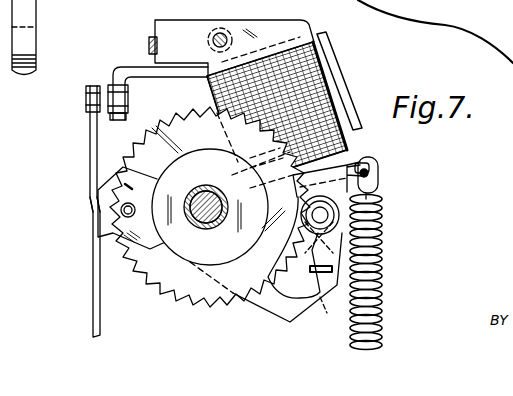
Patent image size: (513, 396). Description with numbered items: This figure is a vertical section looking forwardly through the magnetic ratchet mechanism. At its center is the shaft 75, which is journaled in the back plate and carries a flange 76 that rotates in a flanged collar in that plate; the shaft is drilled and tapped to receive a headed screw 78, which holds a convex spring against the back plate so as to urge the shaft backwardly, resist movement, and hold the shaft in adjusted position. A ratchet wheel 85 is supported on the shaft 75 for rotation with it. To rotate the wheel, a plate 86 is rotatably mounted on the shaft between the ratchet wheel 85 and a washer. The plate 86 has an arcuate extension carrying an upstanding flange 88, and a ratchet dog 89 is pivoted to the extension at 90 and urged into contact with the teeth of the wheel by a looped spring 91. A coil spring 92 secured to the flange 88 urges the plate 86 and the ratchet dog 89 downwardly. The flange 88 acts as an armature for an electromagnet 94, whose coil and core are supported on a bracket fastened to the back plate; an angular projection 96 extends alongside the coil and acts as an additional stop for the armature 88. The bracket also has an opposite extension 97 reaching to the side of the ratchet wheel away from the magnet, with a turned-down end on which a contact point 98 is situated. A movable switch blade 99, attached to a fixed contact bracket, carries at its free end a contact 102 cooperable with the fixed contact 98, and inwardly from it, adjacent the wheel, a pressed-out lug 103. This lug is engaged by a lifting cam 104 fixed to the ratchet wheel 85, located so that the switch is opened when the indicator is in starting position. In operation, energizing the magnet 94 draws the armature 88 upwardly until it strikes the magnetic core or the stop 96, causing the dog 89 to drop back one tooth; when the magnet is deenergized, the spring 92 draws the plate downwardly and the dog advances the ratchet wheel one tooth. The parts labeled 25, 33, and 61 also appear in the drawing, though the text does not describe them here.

The housing 25 is at (277, 2).
The cable 33 is at (435, 31).
The rod 61 is at (0, 12).
The shaft 75 is at (205, 228).
The flange 76 is at (217, 266).
The headed screw 78 is at (200, 186).
The ratchet wheel 85 is at (167, 287).
The plate 86 is at (280, 308).
The upstanding flange 88 is at (363, 160).
The ratchet dog 89 is at (312, 302).
The pivot 90 is at (370, 183).
The looped spring 91 is at (318, 276).
The coil spring 92 is at (385, 252).
The electromagnet 94 is at (317, 80).
The angular projection 96 is at (340, 124).
The opposite extension 97 is at (133, 67).
The contact point 98 is at (128, 97).
The movable switch blade 99 is at (90, 163).
The contact 102 is at (86, 99).
The pressed-out lug 103 is at (90, 212).
The lifting cam 104 is at (115, 230).